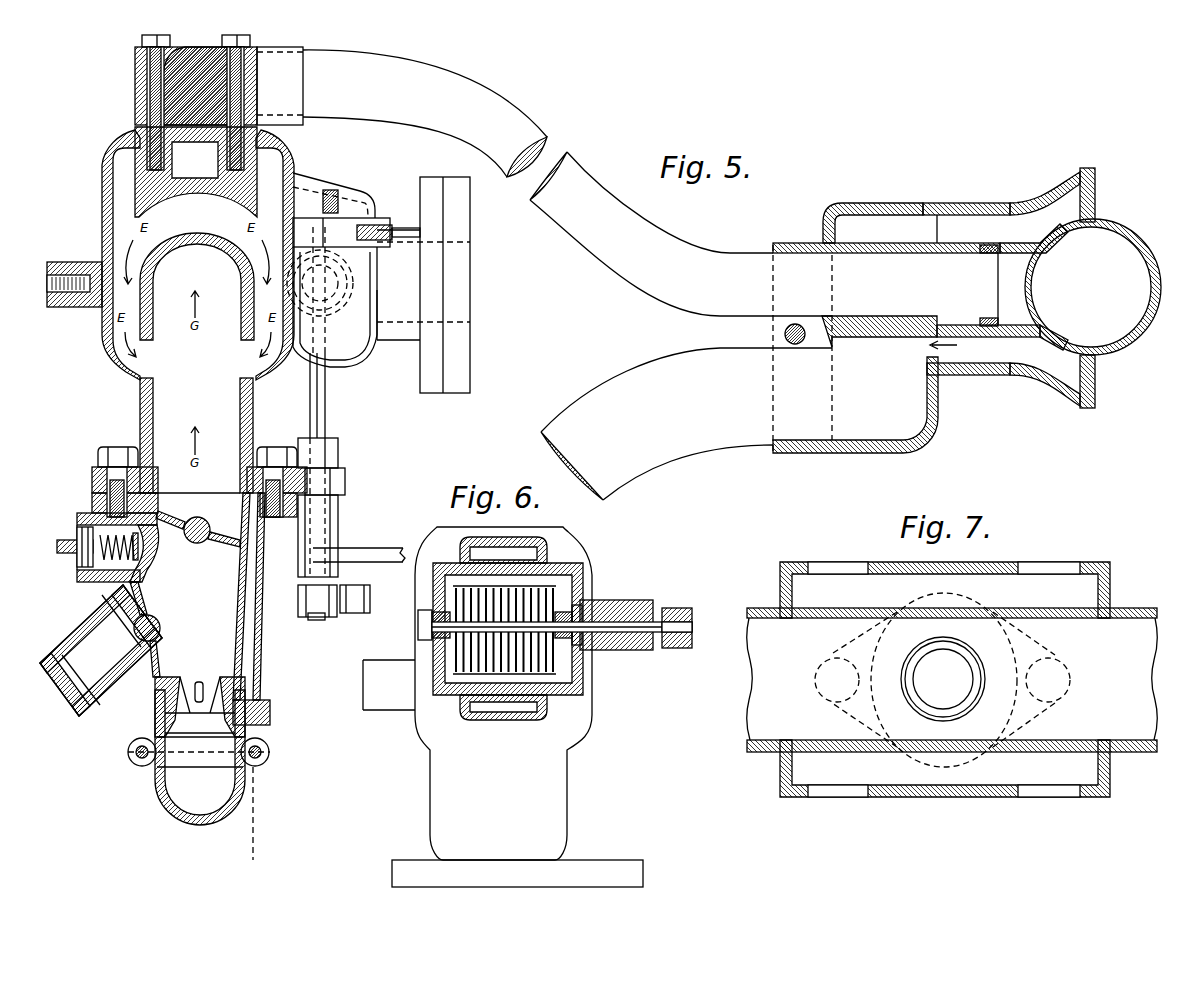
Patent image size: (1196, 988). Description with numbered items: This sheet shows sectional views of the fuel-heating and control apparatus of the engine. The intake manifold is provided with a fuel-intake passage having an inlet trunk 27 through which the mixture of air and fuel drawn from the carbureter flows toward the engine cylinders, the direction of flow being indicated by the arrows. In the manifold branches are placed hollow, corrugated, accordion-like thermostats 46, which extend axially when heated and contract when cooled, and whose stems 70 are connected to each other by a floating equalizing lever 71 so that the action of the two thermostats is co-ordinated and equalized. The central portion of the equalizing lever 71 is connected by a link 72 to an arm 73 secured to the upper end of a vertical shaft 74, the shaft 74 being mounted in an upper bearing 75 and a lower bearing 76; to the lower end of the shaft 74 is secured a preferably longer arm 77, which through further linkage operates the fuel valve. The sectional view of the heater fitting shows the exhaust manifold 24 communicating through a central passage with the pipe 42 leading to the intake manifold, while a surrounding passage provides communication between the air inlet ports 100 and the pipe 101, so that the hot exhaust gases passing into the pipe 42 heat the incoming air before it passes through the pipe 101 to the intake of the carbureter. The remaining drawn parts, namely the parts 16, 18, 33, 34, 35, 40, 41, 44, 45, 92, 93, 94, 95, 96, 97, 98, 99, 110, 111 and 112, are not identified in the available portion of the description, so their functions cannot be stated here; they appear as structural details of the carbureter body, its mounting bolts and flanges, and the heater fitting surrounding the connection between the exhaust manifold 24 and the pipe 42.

In FIG. 5, the float chamber casing 16 is at (358, 498).
In FIG. 5, the bolts 18 is at (128, 750).
In FIG. 5, the exhaust manifold 24 is at (1132, 233).
In FIG. 7, the exhaust manifold 24 is at (1139, 605).
In FIG. 5, the inlet trunk 27 is at (228, 420).
In FIG. 5, the ports 33 is at (124, 370).
In FIG. 5, the dome chamber 34 is at (196, 172).
In FIG. 5, the inner dome wall 35 is at (207, 233).
In FIG. 5, the bolts 40 is at (142, 40).
In FIG. 5, the cover block 41 is at (135, 78).
In FIG. 5, the pipe 42 is at (357, 49).
In FIG. 5, the side passages 44 is at (118, 156).
In FIG. 6, the spring 45 is at (455, 690).
In FIG. 6, the thermostat 46 is at (588, 664).
In FIG. 6, the stem 70 is at (620, 617).
In FIG. 5, the equalizing lever 71 is at (386, 223).
In FIG. 6, the equalizing lever 71 is at (674, 608).
In FIG. 5, the link 72 is at (348, 242).
In FIG. 5, the arm 73 is at (305, 228).
In FIG. 5, the vertical shaft 74 is at (328, 397).
In FIG. 5, the upper bearing 75 is at (338, 206).
In FIG. 5, the lower bearing 76 is at (336, 482).
In FIG. 5, the arm 77 is at (330, 613).
In FIG. 5, the valve 92 is at (157, 715).
In FIG. 5, the valve seat 93 is at (172, 680).
In FIG. 5, the pin 94 is at (213, 688).
In FIG. 5, the cup 95 is at (172, 815).
In FIG. 5, the tube 96 is at (236, 618).
In FIG. 5, the ball joint 97 is at (215, 514).
In FIG. 5, the valve body 98 is at (158, 533).
In FIG. 5, the sleeve 99 is at (1017, 199).
In FIG. 7, the sleeve 99 is at (1114, 588).
In FIG. 5, the air inlet port 100 is at (1037, 181).
In FIG. 7, the air inlet port 100 is at (830, 568).
In FIG. 5, the pipe 101 is at (677, 445).
In FIG. 5, the pipe 110 is at (378, 558).
In FIG. 5, the nozzle fitting 111 is at (912, 310).
In FIG. 7, the nozzle fitting 111 is at (927, 667).
In FIG. 5, the sleeve 112 is at (903, 202).